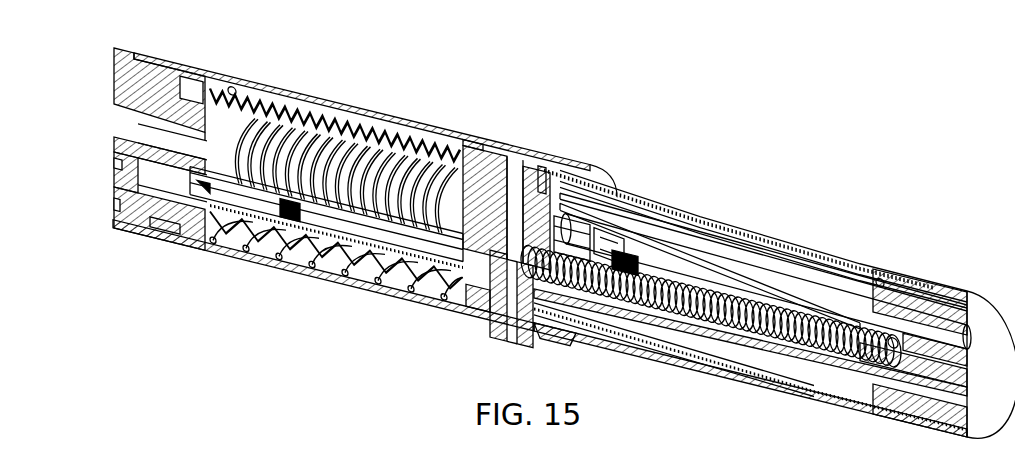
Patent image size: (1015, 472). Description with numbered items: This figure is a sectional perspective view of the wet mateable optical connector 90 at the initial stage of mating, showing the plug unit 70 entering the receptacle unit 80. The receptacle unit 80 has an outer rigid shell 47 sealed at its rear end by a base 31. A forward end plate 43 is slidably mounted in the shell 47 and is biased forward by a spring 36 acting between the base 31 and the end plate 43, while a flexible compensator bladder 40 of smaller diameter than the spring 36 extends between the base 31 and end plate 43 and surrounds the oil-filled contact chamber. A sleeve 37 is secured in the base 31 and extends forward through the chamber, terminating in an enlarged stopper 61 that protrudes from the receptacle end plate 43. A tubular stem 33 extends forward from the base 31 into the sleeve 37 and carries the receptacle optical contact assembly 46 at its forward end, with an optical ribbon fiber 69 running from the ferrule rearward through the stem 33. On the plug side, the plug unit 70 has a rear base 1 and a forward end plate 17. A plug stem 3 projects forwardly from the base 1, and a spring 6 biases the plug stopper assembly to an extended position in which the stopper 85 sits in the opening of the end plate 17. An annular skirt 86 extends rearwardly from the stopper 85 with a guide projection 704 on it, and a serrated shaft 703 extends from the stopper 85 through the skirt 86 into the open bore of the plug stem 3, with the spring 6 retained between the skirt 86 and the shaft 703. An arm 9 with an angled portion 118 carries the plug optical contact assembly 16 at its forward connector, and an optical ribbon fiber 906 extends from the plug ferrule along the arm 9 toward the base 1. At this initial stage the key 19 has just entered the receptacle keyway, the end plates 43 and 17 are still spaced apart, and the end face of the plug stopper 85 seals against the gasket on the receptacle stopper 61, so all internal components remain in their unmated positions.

The base 1 is at (962, 290).
The plug stem 3 is at (804, 360).
The spring 6 is at (558, 320).
The arm 9 is at (801, 283).
The plug optical contact assembly 16 is at (623, 258).
The forward end wall or plate 17 is at (551, 178).
The key 19 is at (540, 157).
The base 31 is at (113, 62).
The tubular stem 33 is at (113, 157).
The spring 36 is at (233, 86).
The sleeve 37 is at (401, 252).
The flexible compensator sleeve or bladder 40 is at (246, 108).
The forward end plate or wall 43 is at (497, 150).
The receptacle optical contact assembly 46 is at (345, 262).
The outer rigid shell or housing 47 is at (168, 452).
The stopper 61 is at (494, 308).
The optical ribbon fiber 69 is at (192, 225).
The plug unit 70 is at (779, 233).
The receptacle unit 80 is at (351, 93).
The stopper 85 is at (528, 292).
The annular sleeve or skirt 86 is at (604, 310).
The wet mateable optical connector 90 is at (630, 104).
The angled portion 118 is at (700, 234).
The serrated shaft 703 is at (669, 335).
The guide projection or protuberance 704 is at (661, 214).
The optical ribbon fiber 906 is at (881, 279).